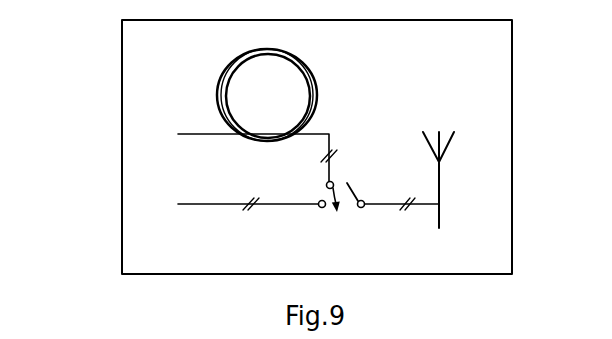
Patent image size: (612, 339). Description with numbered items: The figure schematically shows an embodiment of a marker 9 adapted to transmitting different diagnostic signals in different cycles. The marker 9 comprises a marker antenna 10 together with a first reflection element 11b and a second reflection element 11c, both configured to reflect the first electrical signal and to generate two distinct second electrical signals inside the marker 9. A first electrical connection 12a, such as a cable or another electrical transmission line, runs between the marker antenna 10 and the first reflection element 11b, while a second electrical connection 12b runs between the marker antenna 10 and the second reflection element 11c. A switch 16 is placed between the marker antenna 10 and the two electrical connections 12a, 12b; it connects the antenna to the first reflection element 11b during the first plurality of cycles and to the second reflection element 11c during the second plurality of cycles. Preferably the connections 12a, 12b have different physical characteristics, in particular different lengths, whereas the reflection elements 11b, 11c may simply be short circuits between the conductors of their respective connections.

The marker 9 is at (122, 265).
The marker antenna 10 is at (439, 178).
The first reflection element 11b is at (148, 133).
The second reflection element 11c is at (148, 202).
The first electrical connection 12a is at (316, 90).
The second electrical connection 12b is at (310, 206).
The switch 16 is at (362, 168).